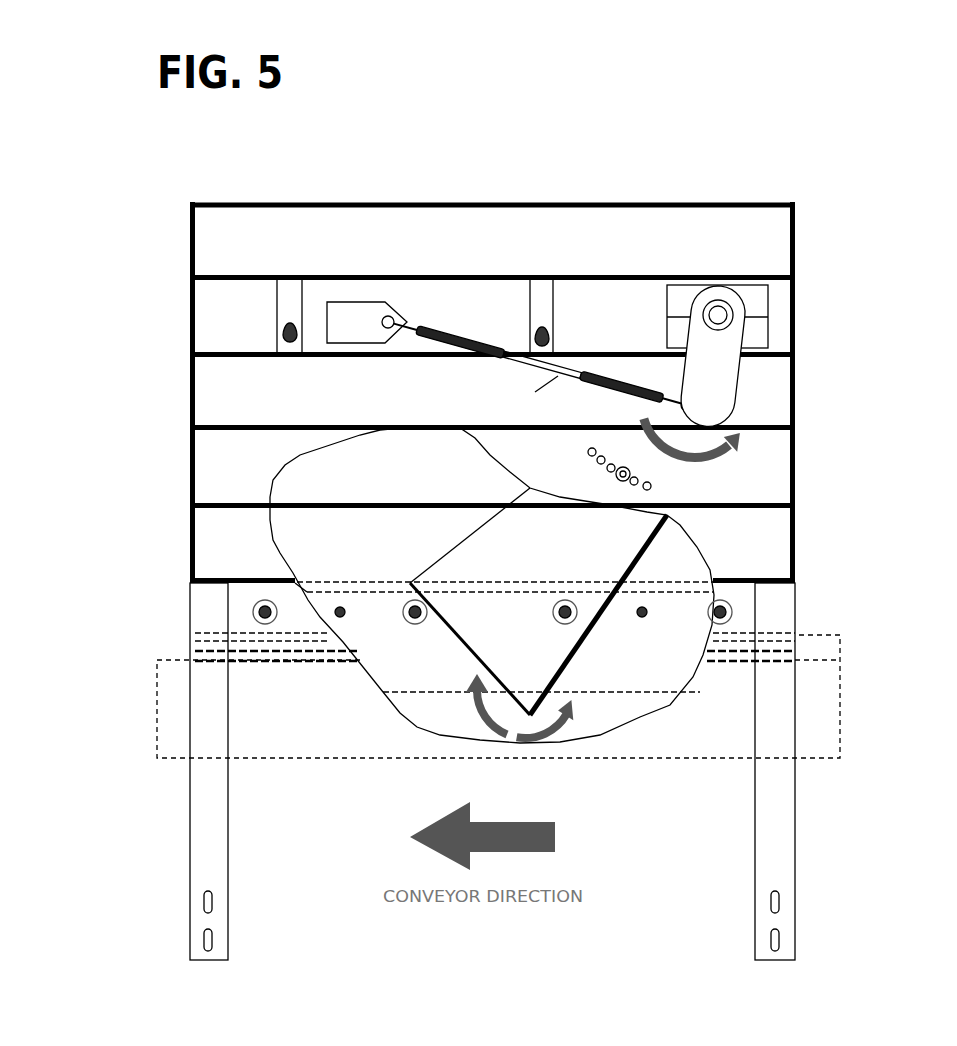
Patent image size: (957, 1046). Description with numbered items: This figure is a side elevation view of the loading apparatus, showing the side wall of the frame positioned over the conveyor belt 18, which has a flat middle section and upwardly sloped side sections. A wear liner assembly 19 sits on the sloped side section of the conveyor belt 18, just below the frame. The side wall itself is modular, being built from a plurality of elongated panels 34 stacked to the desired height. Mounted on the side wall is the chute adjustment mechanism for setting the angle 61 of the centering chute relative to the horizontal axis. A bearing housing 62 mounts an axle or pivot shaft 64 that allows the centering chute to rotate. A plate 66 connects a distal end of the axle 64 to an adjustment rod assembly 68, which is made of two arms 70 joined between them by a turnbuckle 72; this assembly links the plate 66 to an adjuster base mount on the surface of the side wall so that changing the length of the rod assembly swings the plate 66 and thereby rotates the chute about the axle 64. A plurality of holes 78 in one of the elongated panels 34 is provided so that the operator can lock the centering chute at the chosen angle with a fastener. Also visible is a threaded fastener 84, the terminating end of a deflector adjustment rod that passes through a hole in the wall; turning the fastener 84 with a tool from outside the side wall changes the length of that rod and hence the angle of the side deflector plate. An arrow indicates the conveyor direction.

The conveyor belt 18 is at (820, 733).
The liner assembly 19 is at (215, 607).
The elongated panels 34 is at (598, 233).
The angle 61 is at (537, 737).
The bearing housing 62 is at (753, 290).
The axle 64 is at (722, 303).
The plate 66 is at (718, 367).
The adjustment rod assembly 68 is at (532, 250).
The arms 70 is at (435, 335).
The turnbuckle 72 is at (534, 390).
The holes 78 is at (650, 488).
The threaded fastener 84 is at (288, 308).